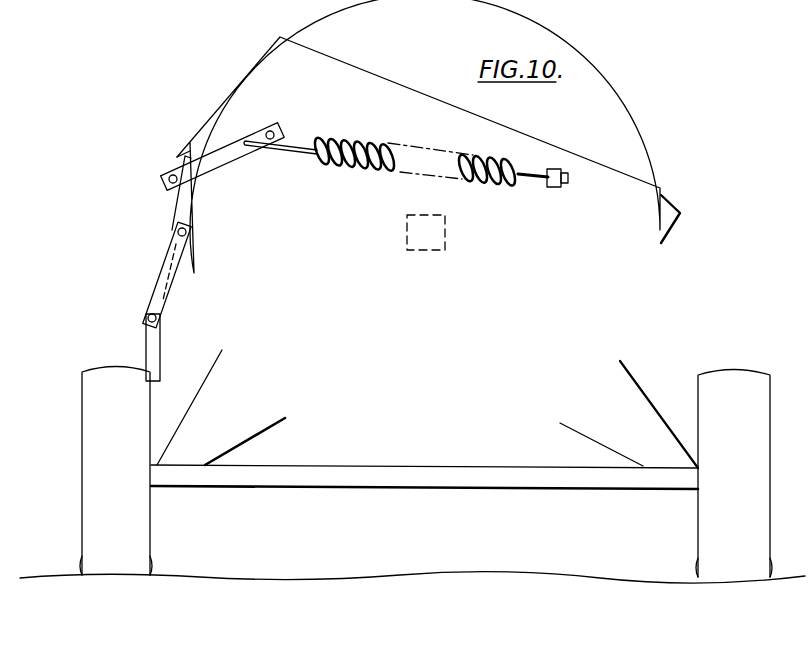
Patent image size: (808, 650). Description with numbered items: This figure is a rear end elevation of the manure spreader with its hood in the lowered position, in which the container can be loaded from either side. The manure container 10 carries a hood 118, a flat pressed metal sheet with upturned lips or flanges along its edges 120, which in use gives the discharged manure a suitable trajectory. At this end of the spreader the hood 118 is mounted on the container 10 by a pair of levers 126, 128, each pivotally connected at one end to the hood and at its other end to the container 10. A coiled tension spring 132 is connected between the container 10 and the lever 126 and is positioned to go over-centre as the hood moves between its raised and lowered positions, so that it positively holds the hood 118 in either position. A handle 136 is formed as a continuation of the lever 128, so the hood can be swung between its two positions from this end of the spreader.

The manure container 10 is at (597, 332).
The hood 118 is at (178, 203).
The edges 120 is at (165, 172).
The lever 126 is at (220, 157).
The lever 128 is at (162, 288).
The coiled tension spring 132 is at (360, 146).
The handle 136 is at (150, 348).